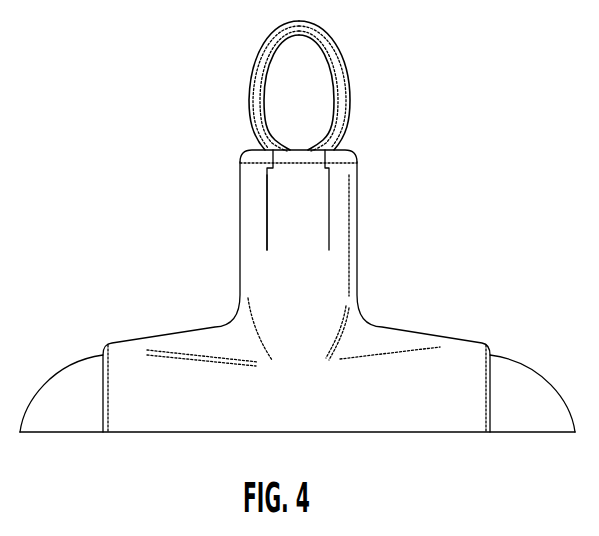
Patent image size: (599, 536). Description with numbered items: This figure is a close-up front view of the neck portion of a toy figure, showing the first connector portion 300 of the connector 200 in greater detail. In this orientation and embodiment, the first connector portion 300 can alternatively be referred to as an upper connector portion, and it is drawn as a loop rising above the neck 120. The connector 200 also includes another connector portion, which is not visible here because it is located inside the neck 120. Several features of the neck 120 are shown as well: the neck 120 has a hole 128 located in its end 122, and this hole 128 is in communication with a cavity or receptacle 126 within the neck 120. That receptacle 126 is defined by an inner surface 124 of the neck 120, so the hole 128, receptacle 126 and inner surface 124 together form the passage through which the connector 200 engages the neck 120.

The neck 120 is at (240, 233).
The end 122 is at (262, 150).
The inner surface 124 is at (330, 185).
The receptacle 126 is at (305, 223).
The hole 128 is at (300, 162).
The connector 200 is at (272, 42).
The first connector portion 300 is at (343, 82).